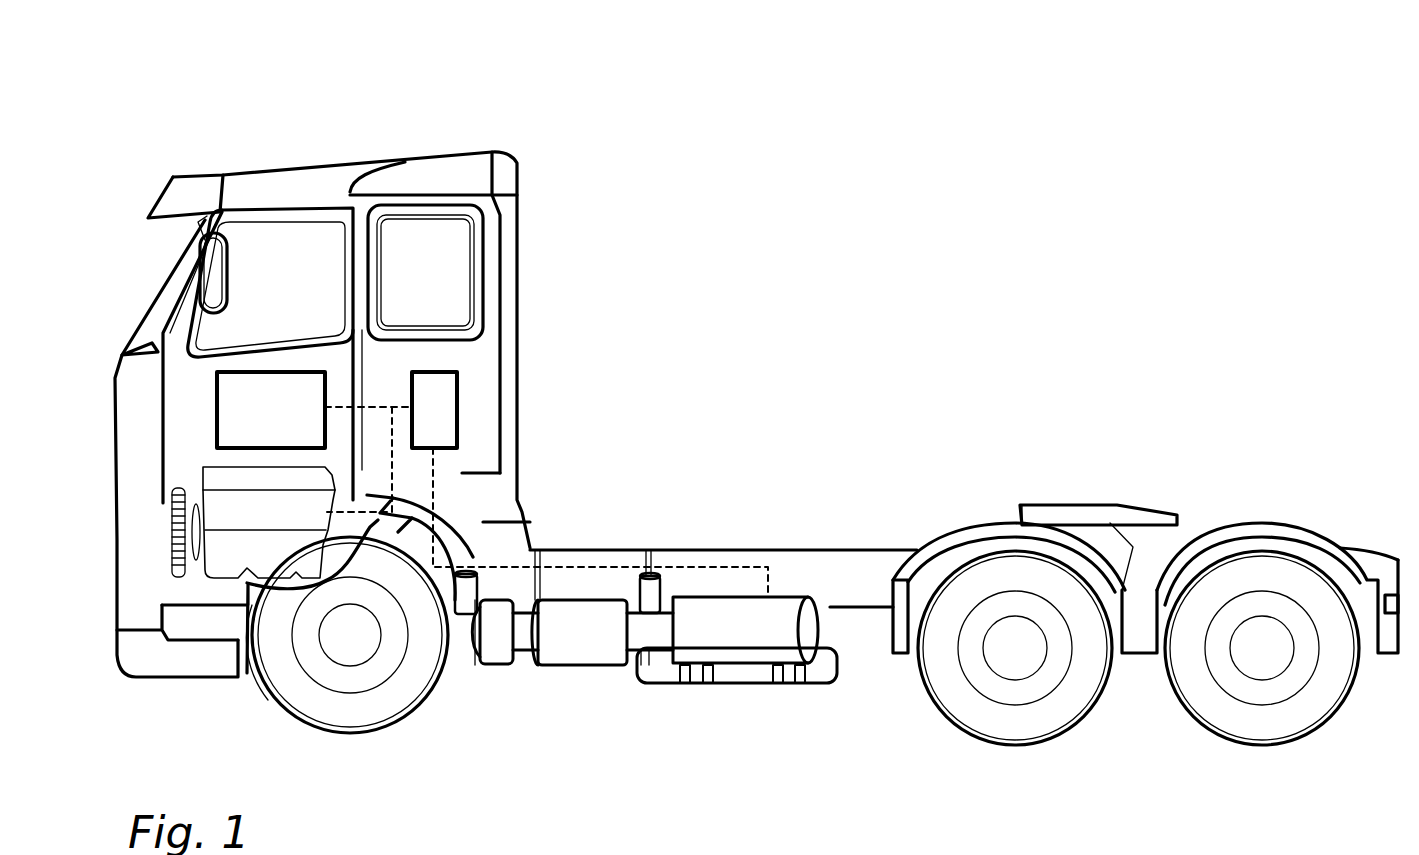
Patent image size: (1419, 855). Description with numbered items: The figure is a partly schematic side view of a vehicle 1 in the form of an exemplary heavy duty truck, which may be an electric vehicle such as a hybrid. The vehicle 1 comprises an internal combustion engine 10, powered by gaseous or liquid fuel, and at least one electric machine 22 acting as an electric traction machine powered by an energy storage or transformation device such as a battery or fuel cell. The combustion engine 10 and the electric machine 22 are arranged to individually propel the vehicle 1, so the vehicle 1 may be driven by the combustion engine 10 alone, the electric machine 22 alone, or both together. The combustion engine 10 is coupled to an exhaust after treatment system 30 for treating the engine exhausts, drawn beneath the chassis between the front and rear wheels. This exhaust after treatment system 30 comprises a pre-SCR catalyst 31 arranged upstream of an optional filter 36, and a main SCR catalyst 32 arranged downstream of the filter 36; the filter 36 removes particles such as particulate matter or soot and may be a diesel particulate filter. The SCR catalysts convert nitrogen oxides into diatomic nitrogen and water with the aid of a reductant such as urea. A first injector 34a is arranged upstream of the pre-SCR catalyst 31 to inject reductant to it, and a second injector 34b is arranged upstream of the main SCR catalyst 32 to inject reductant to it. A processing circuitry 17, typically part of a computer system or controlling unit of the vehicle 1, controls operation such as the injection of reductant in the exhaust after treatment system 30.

The vehicle 1 is at (162, 146).
The internal combustion engine 10 is at (203, 478).
The processing circuitry 17 is at (458, 402).
The electric machine 22 is at (213, 378).
The exhaust after treatment system 30 is at (702, 474).
The pre-SCR catalyst 31 is at (490, 675).
The main SCR catalyst 32 is at (728, 685).
The first injector 34a is at (477, 578).
The second injector 34b is at (660, 576).
The filter 36 is at (550, 668).